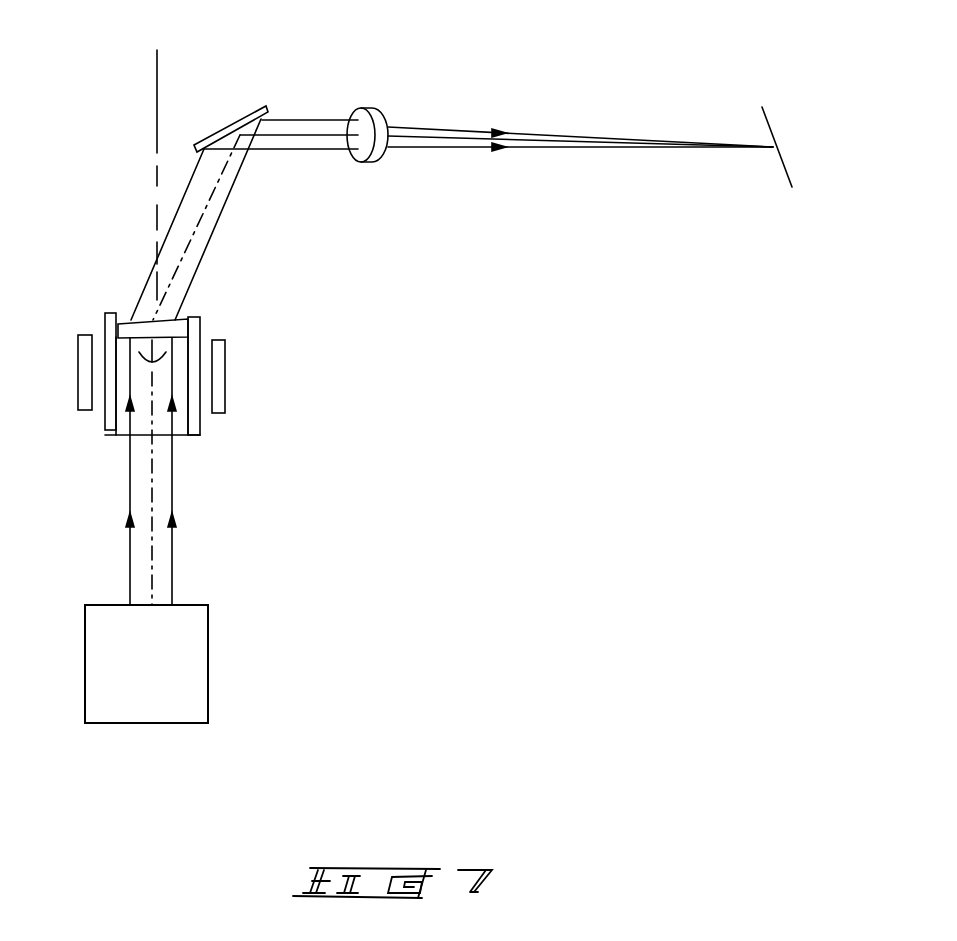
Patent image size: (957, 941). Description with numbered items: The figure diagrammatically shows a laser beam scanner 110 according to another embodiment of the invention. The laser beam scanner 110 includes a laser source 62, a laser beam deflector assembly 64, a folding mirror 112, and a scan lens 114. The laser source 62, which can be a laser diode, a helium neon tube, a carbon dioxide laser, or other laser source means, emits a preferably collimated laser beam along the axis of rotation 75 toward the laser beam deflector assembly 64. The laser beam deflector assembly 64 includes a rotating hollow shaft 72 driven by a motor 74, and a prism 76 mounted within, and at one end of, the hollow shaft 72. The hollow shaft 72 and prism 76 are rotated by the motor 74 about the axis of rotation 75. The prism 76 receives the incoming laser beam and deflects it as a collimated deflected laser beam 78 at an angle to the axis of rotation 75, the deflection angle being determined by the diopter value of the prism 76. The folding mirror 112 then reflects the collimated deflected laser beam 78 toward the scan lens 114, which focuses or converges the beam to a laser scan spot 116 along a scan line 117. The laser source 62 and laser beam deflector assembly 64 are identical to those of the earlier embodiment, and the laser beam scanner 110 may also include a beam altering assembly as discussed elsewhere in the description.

The laser source 62 is at (208, 642).
The laser beam deflector assembly 64 is at (184, 396).
The rotating hollow shaft 72 is at (112, 431).
The motor 74 is at (82, 380).
The axis of rotation 75 is at (157, 137).
The prism 76 is at (180, 322).
The deflected laser beam 78 is at (165, 250).
The laser beam scanner 110 is at (398, 271).
The folding mirror 112 is at (263, 113).
The scan lens 114 is at (380, 116).
The laser scan spot 116 is at (773, 150).
The scan line 117 is at (767, 122).